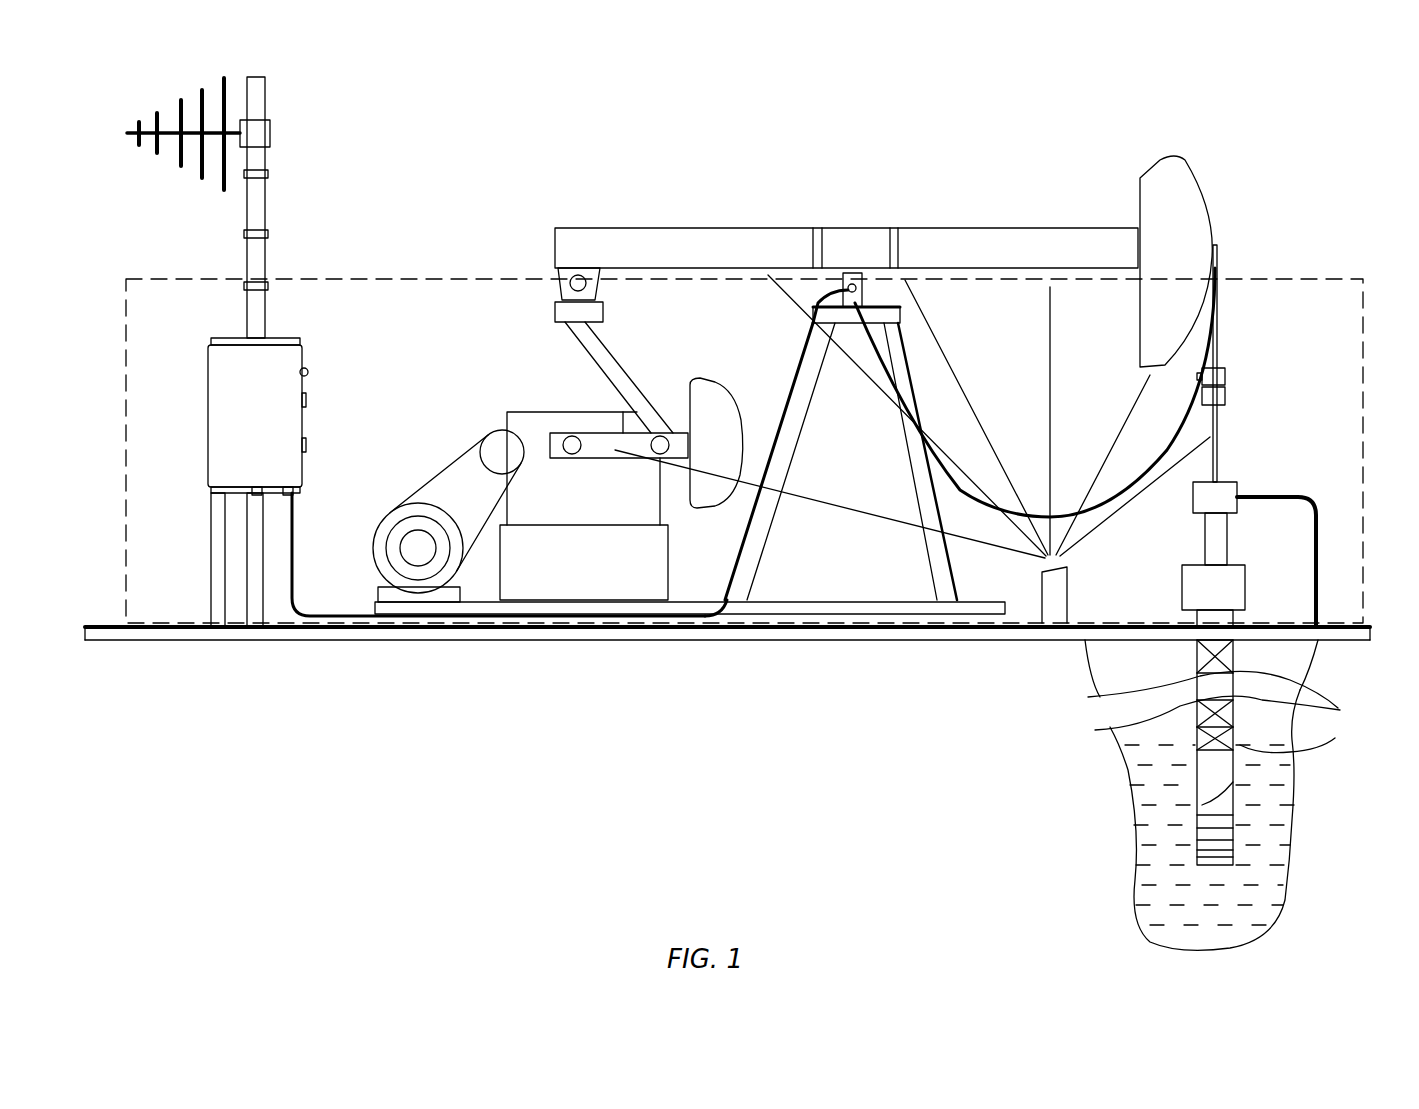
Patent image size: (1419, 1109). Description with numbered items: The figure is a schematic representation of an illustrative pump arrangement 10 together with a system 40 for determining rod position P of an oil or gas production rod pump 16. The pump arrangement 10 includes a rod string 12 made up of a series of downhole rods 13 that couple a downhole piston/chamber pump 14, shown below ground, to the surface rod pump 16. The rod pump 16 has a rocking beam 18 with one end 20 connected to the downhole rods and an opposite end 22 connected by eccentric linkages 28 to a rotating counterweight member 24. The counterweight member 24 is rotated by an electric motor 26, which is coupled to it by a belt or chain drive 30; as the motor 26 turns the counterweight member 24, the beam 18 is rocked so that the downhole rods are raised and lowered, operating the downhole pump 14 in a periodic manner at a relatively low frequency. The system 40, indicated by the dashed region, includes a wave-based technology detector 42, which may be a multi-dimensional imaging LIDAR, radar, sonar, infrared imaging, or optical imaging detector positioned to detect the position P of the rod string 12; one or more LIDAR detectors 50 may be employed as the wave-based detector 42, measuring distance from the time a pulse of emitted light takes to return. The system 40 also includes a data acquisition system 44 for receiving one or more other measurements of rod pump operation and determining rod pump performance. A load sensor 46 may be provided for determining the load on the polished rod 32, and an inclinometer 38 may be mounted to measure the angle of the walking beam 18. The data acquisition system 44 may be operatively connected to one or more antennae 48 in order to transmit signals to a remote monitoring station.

The pump arrangement 10 is at (1109, 124).
The rod string 12 is at (1235, 655).
The downhole rods 13 is at (1195, 645).
The downhole piston/chamber pump 14 is at (1238, 820).
The oil or gas production rod pump 16 is at (793, 370).
The rocking beam 18 is at (690, 240).
The end of rocking beam 20 is at (1195, 178).
The opposite end of rocking beam 22 is at (578, 228).
The rotating counterweight member 24 is at (687, 407).
The electric motor 26 is at (400, 550).
The eccentric linkages 28 is at (612, 353).
The belt or chain drive 30 is at (457, 467).
The polished rod 32 is at (1218, 447).
The inclinometer 38 is at (850, 290).
The system for determining rod position 40 is at (1363, 352).
The wave-based technology detector 42 is at (1075, 596).
The data acquisition system 44 is at (297, 345).
The load sensor 46 is at (1225, 378).
The antennae 48 is at (265, 100).
The LIDAR detectors 50 is at (1040, 596).
The rod position P is at (1218, 420).